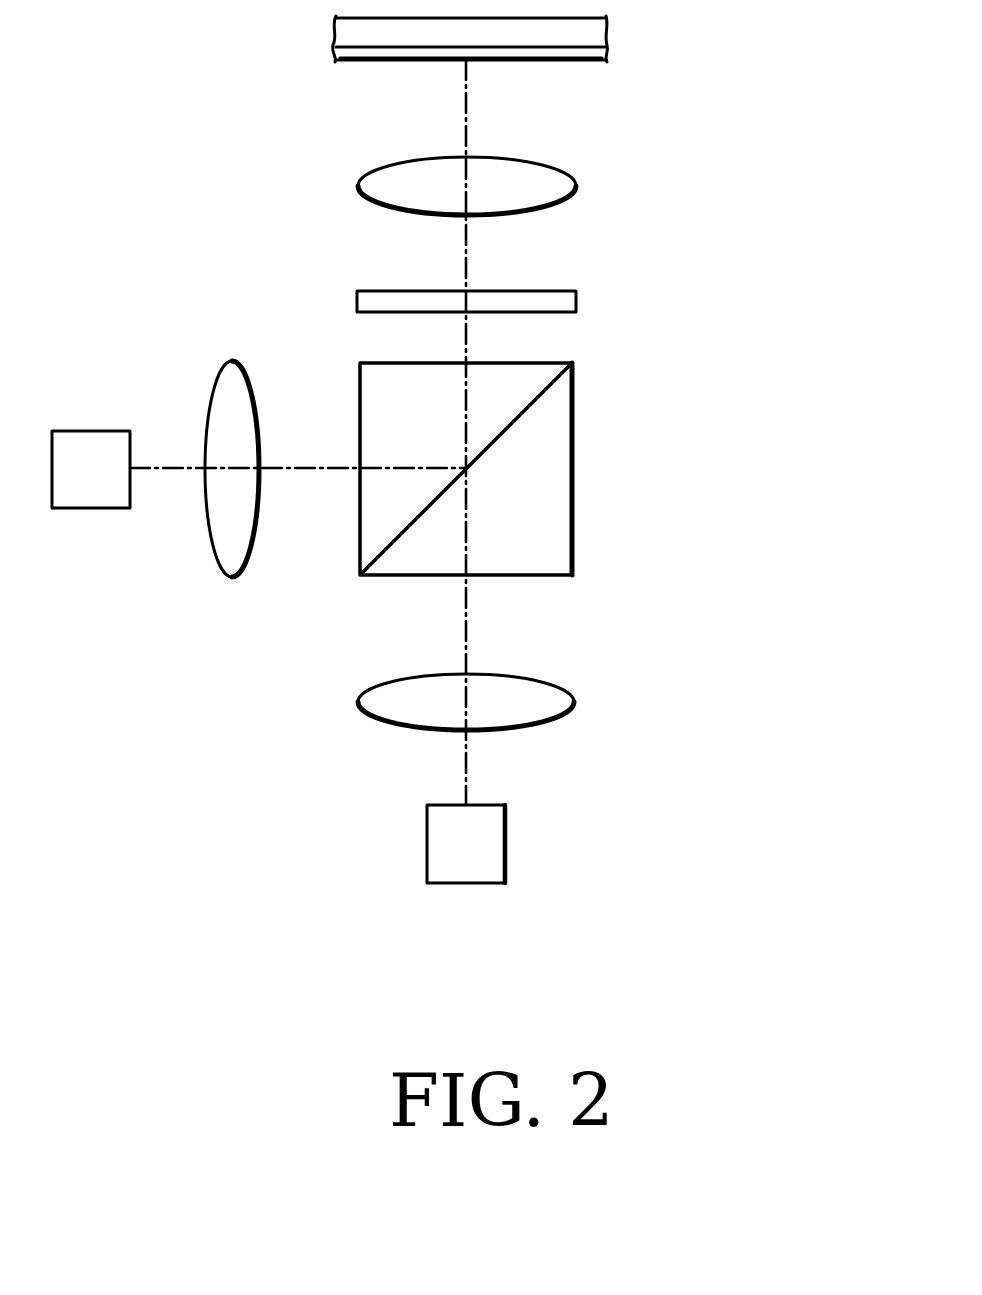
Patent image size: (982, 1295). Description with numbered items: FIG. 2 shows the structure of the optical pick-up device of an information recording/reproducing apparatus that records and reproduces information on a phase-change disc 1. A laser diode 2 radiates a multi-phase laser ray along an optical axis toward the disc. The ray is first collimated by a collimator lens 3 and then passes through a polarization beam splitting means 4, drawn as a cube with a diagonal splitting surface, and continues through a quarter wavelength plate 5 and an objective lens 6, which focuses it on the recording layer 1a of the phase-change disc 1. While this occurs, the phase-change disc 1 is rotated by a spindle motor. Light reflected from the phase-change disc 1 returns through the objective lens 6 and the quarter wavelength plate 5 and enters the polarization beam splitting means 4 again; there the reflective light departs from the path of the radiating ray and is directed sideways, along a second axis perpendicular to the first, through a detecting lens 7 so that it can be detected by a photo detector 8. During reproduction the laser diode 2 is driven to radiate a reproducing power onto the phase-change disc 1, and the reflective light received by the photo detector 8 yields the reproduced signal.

The phase-change disc 1 is at (607, 31).
The recording layer 1a is at (586, 60).
The laser diode 2 is at (505, 840).
The collimator lens 3 is at (575, 703).
The polarization beam splitting means 4 is at (572, 470).
The quarter wavelength plate 5 is at (576, 302).
The objective lens 6 is at (576, 187).
The detecting lens 7 is at (233, 577).
The photo detector 8 is at (90, 508).